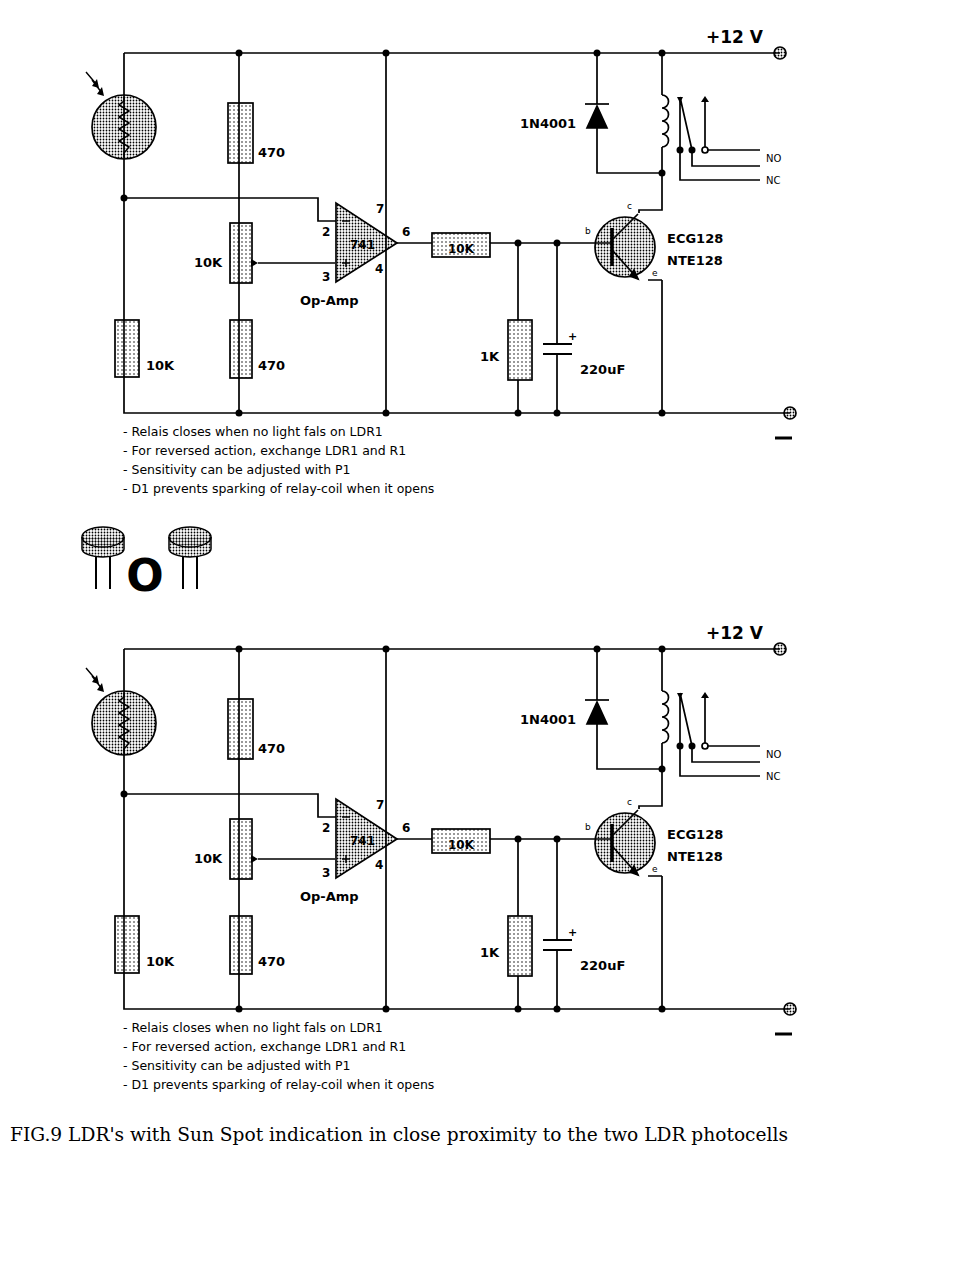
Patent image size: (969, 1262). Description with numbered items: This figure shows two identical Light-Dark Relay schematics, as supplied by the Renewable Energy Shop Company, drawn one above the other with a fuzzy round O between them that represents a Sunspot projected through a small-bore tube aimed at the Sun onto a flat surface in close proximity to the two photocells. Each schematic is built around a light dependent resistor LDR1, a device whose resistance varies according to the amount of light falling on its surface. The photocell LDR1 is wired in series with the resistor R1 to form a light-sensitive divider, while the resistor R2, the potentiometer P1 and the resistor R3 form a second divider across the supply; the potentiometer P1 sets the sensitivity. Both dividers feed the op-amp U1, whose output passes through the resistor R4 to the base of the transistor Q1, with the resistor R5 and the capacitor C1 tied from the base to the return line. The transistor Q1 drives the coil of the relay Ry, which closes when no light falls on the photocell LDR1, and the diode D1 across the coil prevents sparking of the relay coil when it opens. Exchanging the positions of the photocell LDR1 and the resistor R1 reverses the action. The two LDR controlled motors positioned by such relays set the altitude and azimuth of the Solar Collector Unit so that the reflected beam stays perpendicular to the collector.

The light dependent resistor photocell LDR1 is at (129, 425).
The resistor 10K R1 is at (140, 646).
The resistor 470 R2 is at (252, 431).
The resistor 470 R3 is at (253, 647).
The potentiometer 10K P1 is at (227, 551).
The 741 op-amp U1 is at (363, 528).
The resistor 10K R4 is at (461, 533).
The resistor 1K R5 is at (504, 648).
The capacitor 220uF C1 is at (571, 644).
The diode 1N4001 D1 is at (577, 410).
The transistor ECG128/NTE128 Q1 is at (617, 551).
The relay Ry is at (699, 419).